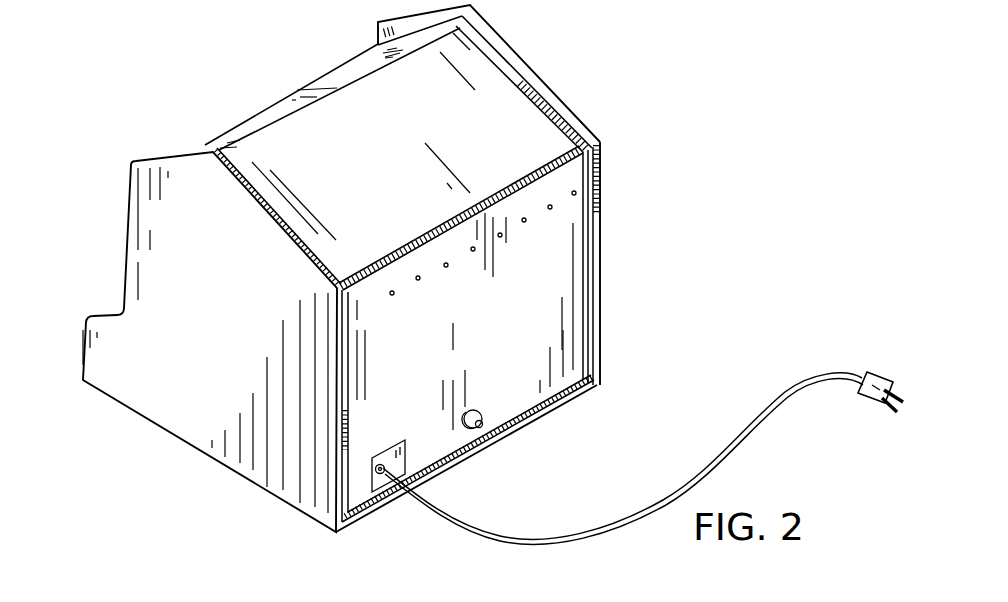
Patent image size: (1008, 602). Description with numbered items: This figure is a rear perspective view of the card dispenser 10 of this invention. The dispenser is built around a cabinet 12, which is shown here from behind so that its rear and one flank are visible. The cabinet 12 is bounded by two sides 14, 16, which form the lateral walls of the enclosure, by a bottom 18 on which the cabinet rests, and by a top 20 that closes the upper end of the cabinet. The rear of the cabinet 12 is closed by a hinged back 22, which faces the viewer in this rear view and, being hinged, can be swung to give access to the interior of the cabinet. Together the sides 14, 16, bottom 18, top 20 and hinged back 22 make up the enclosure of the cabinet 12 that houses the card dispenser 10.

The card dispenser 10 is at (655, 147).
The cabinet 12 is at (142, 220).
The side 14 is at (207, 300).
The side 16 is at (540, 79).
The bottom 18 is at (388, 498).
The top 20 is at (360, 166).
The hinged back 22 is at (543, 273).